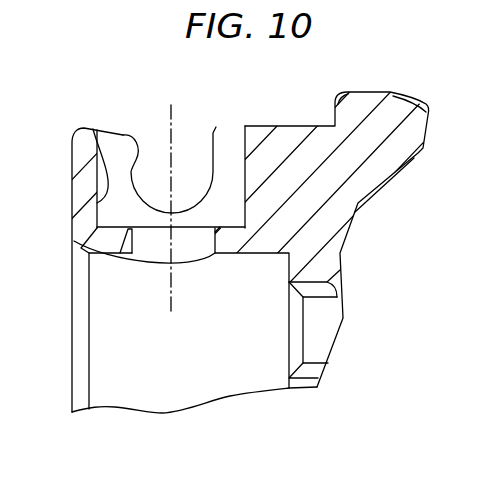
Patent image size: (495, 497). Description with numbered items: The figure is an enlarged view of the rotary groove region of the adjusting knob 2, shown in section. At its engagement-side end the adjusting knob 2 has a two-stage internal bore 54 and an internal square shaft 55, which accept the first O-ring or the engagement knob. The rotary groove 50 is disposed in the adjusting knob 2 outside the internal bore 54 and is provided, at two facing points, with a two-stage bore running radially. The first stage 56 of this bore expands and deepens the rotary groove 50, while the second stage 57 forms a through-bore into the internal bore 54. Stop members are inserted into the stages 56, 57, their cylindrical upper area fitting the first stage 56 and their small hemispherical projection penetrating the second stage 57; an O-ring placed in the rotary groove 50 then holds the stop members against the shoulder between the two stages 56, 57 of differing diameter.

The adjusting knob 2 is at (390, 158).
The rotary groove 50 is at (127, 137).
The internal bore 54 is at (268, 253).
The internal square shaft 55 is at (340, 283).
The first stage of the two-stage bore 56 is at (93, 129).
The second stage of the two-stage bore 57 is at (88, 253).